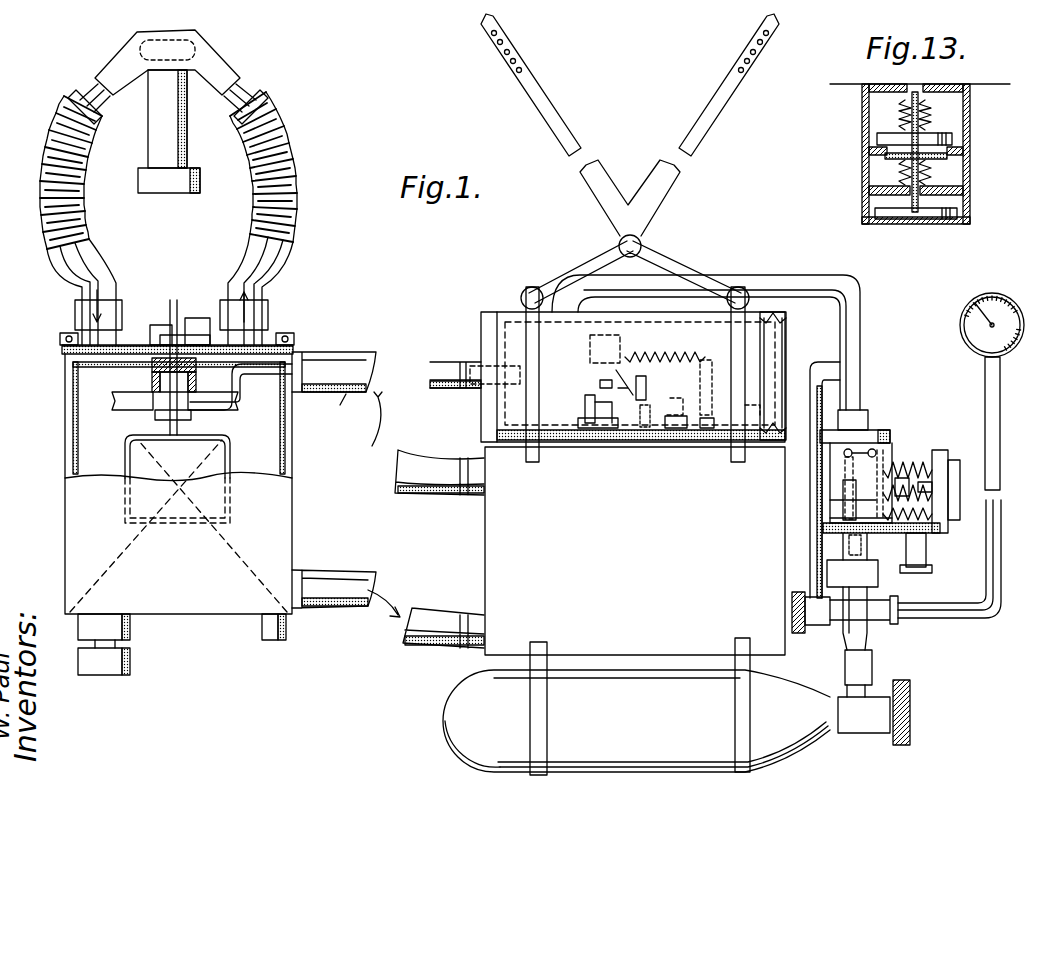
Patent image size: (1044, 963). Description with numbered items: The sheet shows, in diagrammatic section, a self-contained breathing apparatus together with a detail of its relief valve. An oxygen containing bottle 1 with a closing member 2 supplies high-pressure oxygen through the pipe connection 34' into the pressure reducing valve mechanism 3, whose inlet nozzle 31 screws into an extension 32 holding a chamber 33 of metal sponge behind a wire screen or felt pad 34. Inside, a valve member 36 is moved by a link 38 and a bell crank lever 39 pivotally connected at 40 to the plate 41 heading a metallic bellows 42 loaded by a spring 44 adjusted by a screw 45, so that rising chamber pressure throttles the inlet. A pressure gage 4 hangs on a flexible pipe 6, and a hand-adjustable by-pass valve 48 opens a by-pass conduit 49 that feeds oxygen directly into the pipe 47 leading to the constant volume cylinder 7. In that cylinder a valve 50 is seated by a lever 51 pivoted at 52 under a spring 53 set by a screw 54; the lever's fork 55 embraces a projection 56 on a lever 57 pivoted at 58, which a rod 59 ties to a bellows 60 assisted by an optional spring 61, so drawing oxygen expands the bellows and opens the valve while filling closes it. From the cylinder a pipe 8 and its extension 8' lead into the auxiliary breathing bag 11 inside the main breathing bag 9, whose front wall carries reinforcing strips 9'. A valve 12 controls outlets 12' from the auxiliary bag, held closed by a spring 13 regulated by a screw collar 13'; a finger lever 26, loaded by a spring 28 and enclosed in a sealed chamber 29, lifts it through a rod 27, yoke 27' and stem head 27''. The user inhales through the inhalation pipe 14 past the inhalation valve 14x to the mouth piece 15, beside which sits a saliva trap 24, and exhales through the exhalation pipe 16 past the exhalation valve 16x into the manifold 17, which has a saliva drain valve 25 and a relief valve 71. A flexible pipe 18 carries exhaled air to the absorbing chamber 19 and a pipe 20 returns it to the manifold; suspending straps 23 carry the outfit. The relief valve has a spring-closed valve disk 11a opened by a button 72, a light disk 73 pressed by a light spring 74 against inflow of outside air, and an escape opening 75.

In FIG. 1, the oxygen containing bottle 1 is at (666, 721).
In FIG. 1, the closing member 2 is at (912, 712).
In FIG. 1, the pressure reducing valve mechanism 3 is at (838, 488).
In FIG. 1, the pressure gage 4 is at (990, 297).
In FIG. 1, the flexible pipe 6 is at (1001, 410).
In FIG. 1, the constant volume cylinder 7 is at (694, 290).
In FIG. 1, the pipe 8 is at (422, 383).
In FIG. 1, the pipe extension 8' is at (241, 388).
In FIG. 1, the main breathing bag 9 is at (187, 473).
In FIG. 1, the reinforcing strips 9' is at (178, 526).
In FIG. 1, the auxiliary breathing bag 11 is at (232, 446).
In FIG. 13, the valve disk 11a is at (880, 138).
In FIG. 1, the valve 12 is at (160, 403).
In FIG. 1, the outlets 12' is at (142, 419).
In FIG. 1, the spring 13 is at (213, 401).
In FIG. 1, the screw collar 13' is at (132, 401).
In FIG. 1, the inhalation pipe 14 is at (250, 172).
In FIG. 1, the inhalation valve 14x is at (268, 314).
In FIG. 1, the mouth piece 15 is at (196, 26).
In FIG. 1, the exhalation pipe 16 is at (88, 144).
In FIG. 1, the exhalation valve 16x is at (76, 316).
In FIG. 13, the manifold 17 is at (838, 85).
In FIG. 1, the flexible pipe 18 is at (350, 604).
In FIG. 1, the absorbing chamber 19 is at (635, 551).
In FIG. 1, the pipe 20 is at (346, 352).
In FIG. 1, the suspending straps 23 is at (663, 166).
In FIG. 1, the saliva trap 24 is at (172, 125).
In FIG. 1, the saliva drain valve 25 is at (120, 660).
In FIG. 1, the finger lever 26 is at (194, 330).
In FIG. 1, the rod 27 is at (170, 341).
In FIG. 1, the yoke 27' is at (201, 382).
In FIG. 1, the head 27'' is at (138, 382).
In FIG. 1, the spring 28 is at (210, 322).
In FIG. 1, the sealed chamber 29 is at (150, 332).
In FIG. 1, the inlet nozzle 31 is at (835, 528).
In FIG. 1, the extension 32 is at (868, 546).
In FIG. 1, the chamber 33 is at (862, 558).
In FIG. 1, the wire screen or felt pad 34 is at (814, 568).
In FIG. 1, the pipe connection 34' is at (831, 642).
In FIG. 1, the valve member 36 is at (830, 505).
In FIG. 1, the link 38 is at (830, 468).
In FIG. 1, the bell crank lever 39 is at (885, 468).
In FIG. 1, the pivotal connection 40 is at (866, 500).
In FIG. 1, the plate 41 is at (905, 500).
In FIG. 1, the metallic bellows 42 is at (898, 468).
In FIG. 1, the spring 44 is at (922, 468).
In FIG. 1, the screw 45 is at (952, 530).
In FIG. 1, the pipe 47 is at (850, 333).
In FIG. 1, the by-pass valve 48 is at (816, 625).
In FIG. 1, the by-pass conduit 49 is at (808, 548).
In FIG. 1, the valve 50 is at (600, 400).
In FIG. 1, the lever 51 is at (622, 380).
In FIG. 1, the pivot 52 is at (626, 370).
In FIG. 1, the spring 53 is at (600, 430).
In FIG. 1, the screw 54 is at (641, 376).
In FIG. 1, the fork 55 is at (645, 432).
In FIG. 1, the projection 56 is at (678, 432).
In FIG. 1, the lever 57 is at (673, 396).
In FIG. 1, the pivot 58 is at (708, 432).
In FIG. 1, the rod 59 is at (700, 368).
In FIG. 1, the bellows 60 is at (764, 376).
In FIG. 1, the spring 61 is at (655, 362).
In FIG. 1, the relief valve 71 is at (268, 640).
In FIG. 13, the relief valve 71 is at (968, 140).
In FIG. 13, the button 72 is at (898, 219).
In FIG. 13, the light disk 73 is at (880, 158).
In FIG. 13, the light spring 74 is at (905, 180).
In FIG. 13, the escape opening 75 is at (866, 172).